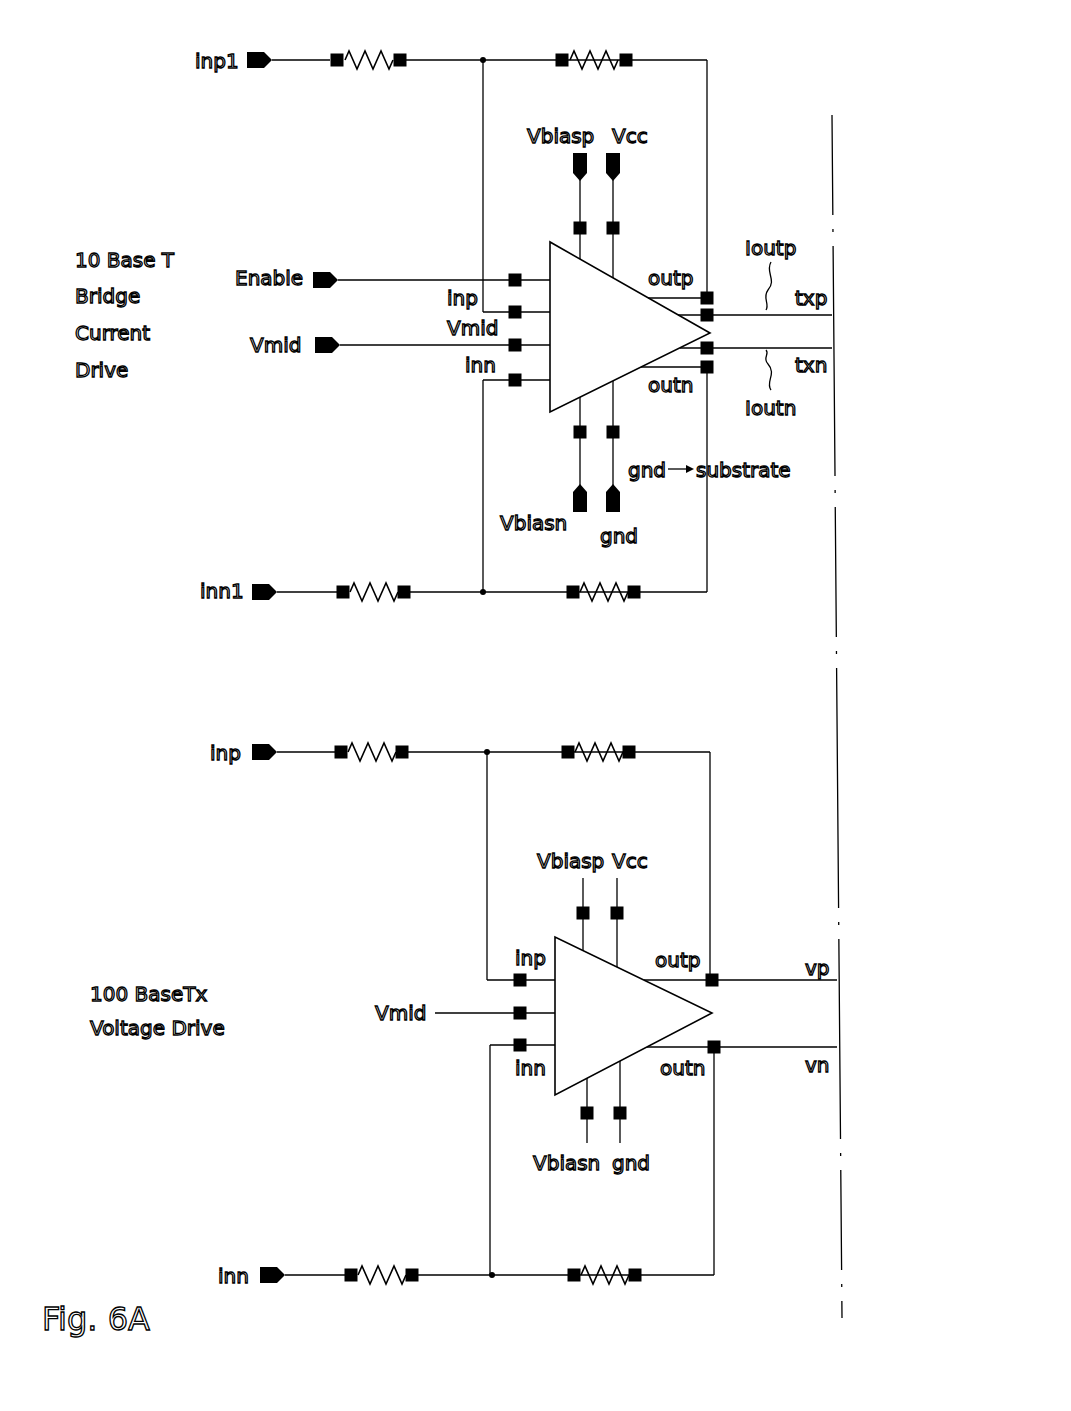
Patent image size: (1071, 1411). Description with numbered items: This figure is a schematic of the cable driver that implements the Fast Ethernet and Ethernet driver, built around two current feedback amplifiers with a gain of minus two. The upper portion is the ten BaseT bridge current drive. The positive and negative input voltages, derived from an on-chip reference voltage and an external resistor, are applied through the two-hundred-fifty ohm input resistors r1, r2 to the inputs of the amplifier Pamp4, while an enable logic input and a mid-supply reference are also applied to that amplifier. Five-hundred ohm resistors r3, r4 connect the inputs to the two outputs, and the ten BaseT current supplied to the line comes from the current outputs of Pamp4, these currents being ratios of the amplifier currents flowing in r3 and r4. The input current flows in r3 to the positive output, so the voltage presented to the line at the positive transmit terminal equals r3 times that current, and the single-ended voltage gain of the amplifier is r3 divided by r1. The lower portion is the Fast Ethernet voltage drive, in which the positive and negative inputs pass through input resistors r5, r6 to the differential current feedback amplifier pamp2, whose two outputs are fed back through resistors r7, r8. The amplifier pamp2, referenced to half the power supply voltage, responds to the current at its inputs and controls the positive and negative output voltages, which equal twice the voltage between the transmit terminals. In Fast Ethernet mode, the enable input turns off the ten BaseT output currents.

The input resistor r1 is at (366, 64).
The input resistor r2 is at (367, 592).
The feedback resistor r3 is at (590, 64).
The feedback resistor r4 is at (597, 597).
The input resistor r5 is at (371, 753).
The input resistor r6 is at (377, 1278).
The feedback resistor r7 is at (592, 753).
The feedback resistor r8 is at (598, 1278).
The amplifier Pamp4 is at (630, 327).
The differential current feedback amplifier pamp2 is at (633, 1016).